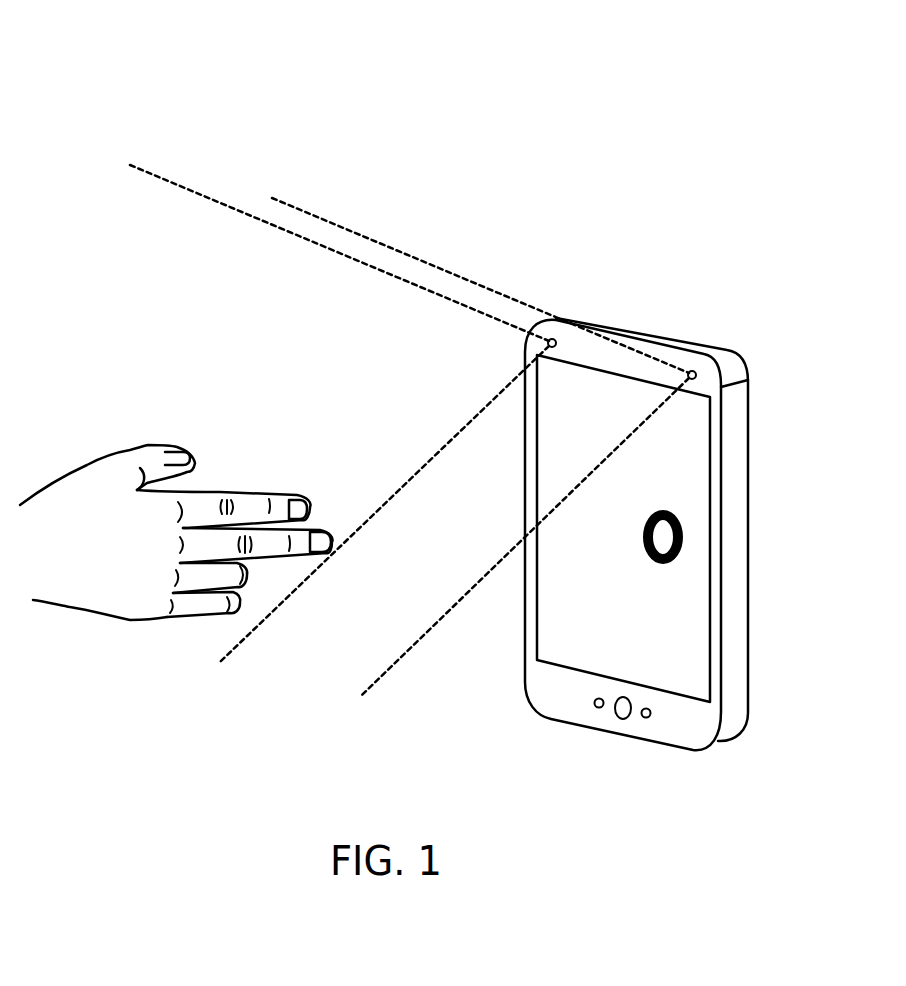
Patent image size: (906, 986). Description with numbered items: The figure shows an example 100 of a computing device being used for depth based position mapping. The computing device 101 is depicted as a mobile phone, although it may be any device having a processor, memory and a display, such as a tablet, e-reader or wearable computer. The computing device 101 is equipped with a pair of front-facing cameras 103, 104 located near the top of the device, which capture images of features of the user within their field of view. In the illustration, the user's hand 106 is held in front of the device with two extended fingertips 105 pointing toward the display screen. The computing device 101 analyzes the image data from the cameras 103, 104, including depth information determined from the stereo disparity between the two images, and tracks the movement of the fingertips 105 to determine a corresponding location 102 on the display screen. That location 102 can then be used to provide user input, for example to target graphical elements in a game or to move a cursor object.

The example of a computing device being used in depth based position mapping 100 is at (200, 96).
The computing device 101 is at (650, 331).
The location on the display screen 102 is at (684, 536).
The front-facing camera 103 is at (694, 373).
The front-facing camera 104 is at (551, 339).
The fingertips 105 is at (336, 528).
The hand 106 is at (84, 463).